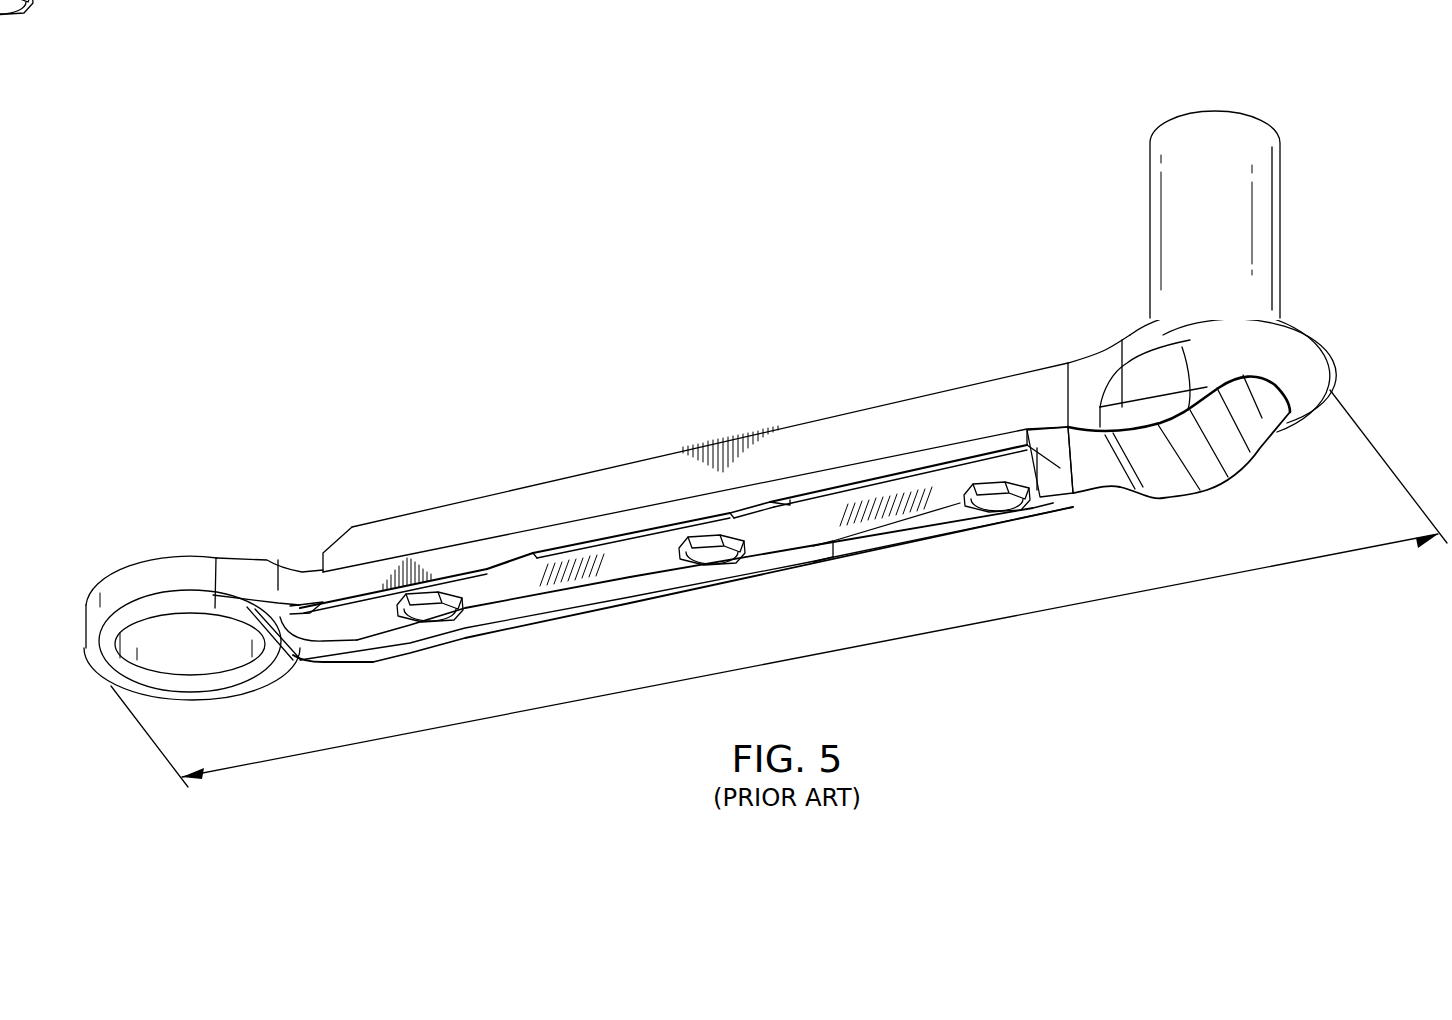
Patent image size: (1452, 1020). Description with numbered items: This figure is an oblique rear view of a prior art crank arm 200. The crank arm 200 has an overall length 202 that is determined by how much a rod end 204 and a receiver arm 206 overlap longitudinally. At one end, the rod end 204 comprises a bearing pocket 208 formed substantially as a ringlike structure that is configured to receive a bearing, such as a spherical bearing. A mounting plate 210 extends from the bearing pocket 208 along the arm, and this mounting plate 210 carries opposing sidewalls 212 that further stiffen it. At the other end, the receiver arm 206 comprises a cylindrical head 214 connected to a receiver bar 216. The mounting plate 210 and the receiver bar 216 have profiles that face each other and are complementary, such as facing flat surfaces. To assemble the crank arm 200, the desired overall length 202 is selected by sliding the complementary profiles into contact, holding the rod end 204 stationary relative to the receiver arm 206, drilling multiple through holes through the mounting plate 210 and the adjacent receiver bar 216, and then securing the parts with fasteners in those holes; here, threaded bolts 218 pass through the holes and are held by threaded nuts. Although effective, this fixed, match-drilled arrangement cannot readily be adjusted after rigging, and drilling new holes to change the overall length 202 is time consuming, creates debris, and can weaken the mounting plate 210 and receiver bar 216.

The prior art crank arm 200 is at (723, 393).
The overall length 202 is at (779, 588).
The rod end 204 is at (247, 550).
The receiver arm 206 is at (1091, 349).
The bearing pocket 208 is at (140, 580).
The mounting plate 210 is at (622, 565).
The opposing sidewalls 212 is at (528, 540).
The cylindrical head 214 is at (1283, 237).
The receiver bar 216 is at (921, 413).
The threaded bolts 218 is at (428, 618).